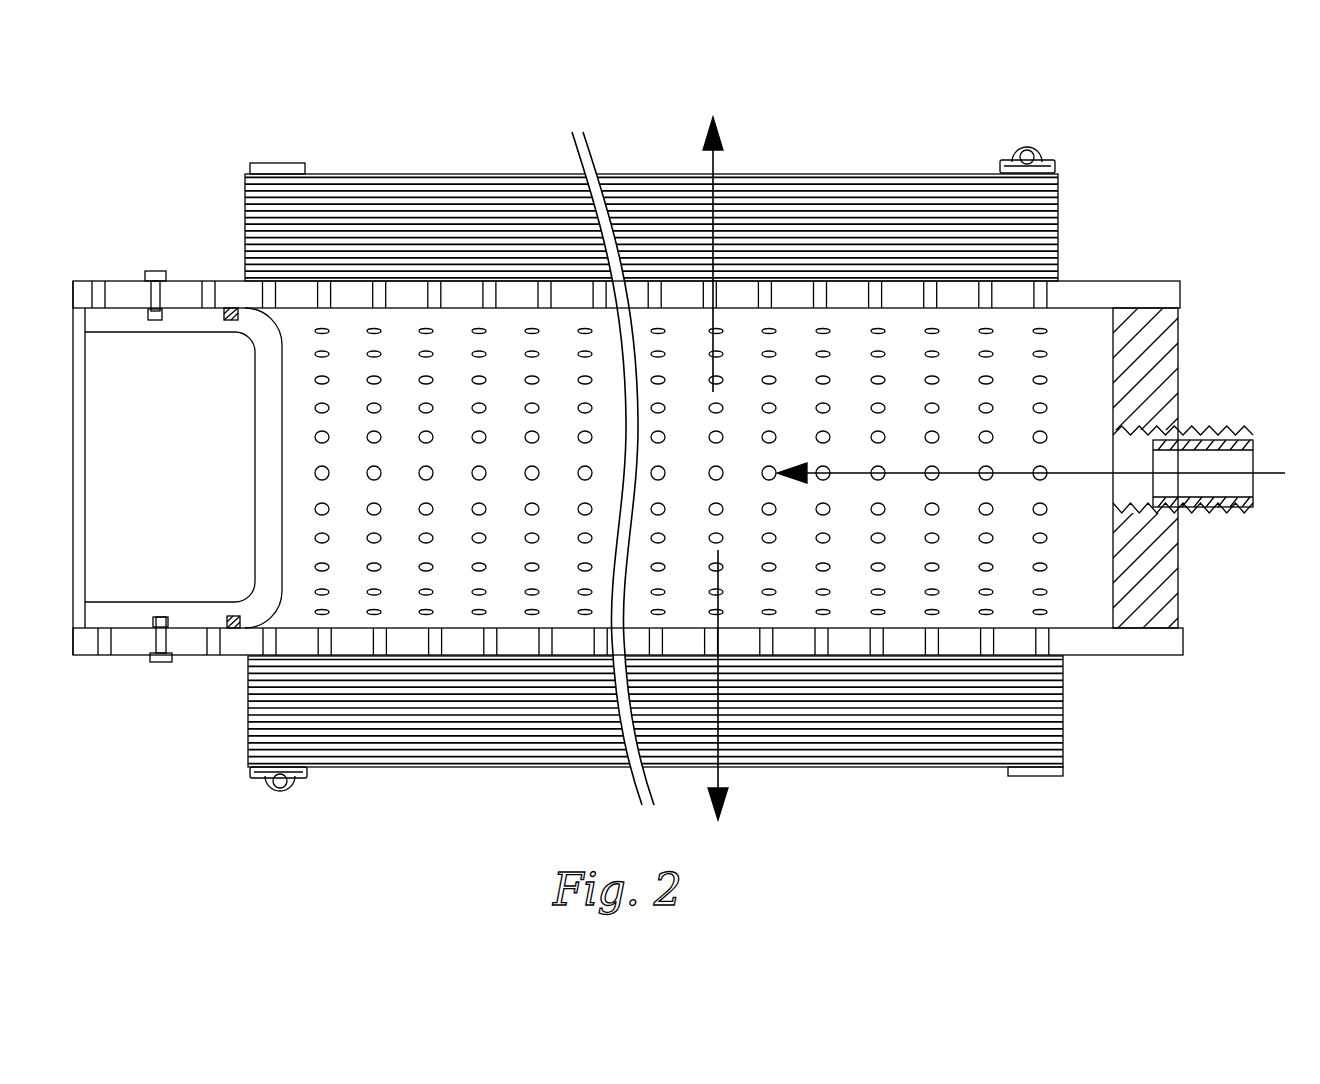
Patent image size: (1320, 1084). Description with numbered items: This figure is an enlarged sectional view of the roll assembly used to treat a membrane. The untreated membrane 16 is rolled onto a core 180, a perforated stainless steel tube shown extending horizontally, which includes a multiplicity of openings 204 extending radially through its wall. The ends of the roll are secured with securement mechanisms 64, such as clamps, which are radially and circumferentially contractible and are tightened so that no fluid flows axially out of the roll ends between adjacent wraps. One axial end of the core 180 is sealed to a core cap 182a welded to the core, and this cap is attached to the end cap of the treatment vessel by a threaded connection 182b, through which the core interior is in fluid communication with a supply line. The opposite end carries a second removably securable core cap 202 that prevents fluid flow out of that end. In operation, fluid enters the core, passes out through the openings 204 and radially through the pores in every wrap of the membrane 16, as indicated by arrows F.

The untreated membrane 16 is at (850, 174).
The securement mechanism 64 is at (1036, 152).
The core 180 is at (1056, 409).
The core cap 182a is at (1148, 562).
The threaded connection 182b is at (1240, 430).
The second removably securable core cap 202 is at (127, 323).
The openings 204 is at (868, 650).
The arrows F is at (1012, 463).